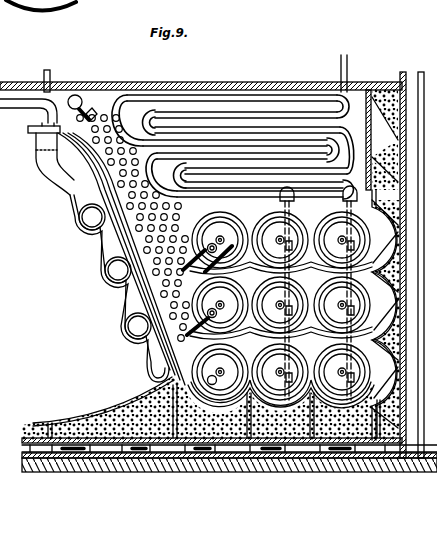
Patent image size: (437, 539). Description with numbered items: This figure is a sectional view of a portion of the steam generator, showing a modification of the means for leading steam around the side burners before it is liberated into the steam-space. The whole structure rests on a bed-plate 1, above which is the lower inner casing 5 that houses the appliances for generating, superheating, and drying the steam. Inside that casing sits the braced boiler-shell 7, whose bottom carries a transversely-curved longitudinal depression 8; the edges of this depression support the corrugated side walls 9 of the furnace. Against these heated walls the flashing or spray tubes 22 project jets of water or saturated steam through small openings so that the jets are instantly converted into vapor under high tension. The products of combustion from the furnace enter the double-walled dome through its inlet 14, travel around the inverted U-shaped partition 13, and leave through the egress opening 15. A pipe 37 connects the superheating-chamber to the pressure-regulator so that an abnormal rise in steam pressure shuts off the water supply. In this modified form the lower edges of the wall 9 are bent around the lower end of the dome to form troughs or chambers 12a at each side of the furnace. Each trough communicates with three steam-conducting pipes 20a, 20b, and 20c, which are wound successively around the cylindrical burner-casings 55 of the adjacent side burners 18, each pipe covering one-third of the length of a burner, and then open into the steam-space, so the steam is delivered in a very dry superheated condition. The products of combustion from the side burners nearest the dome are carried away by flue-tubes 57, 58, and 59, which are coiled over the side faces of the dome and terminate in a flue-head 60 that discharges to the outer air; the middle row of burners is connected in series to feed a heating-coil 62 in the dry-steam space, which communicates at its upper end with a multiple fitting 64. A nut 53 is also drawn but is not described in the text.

The bed-plate 1 is at (229, 282).
The lower inner casing 5 is at (340, 441).
The boiler-shell 7 is at (98, 418).
The transversely-curved longitudinal depression 8 is at (50, 424).
The corrugated side walls 9 is at (122, 324).
The troughs or chambers 12a is at (156, 378).
The inverted U-shaped partition 13 is at (36, 140).
The inlet of the dome 14 is at (48, 168).
The egress opening 15 is at (32, 135).
The side burners 18 is at (216, 232).
The steam-conducting pipe 20a is at (342, 212).
The steam-conducting pipe 20b is at (340, 208).
The steam-conducting pipe 20c is at (0, 223).
The flashing or spray tubes 22 is at (140, 323).
The pipe 37 is at (50, 64).
The nut 53 is at (219, 318).
The cylindrical burner-casings 55 is at (262, 226).
The flue-tubes 57 is at (253, 298).
The flue-tubes 58 is at (210, 300).
The flue-tubes 59 is at (200, 262).
The flue-head 60 is at (86, 107).
The heating-coil 62 is at (194, 198).
The multiple fitting 64 is at (349, 88).